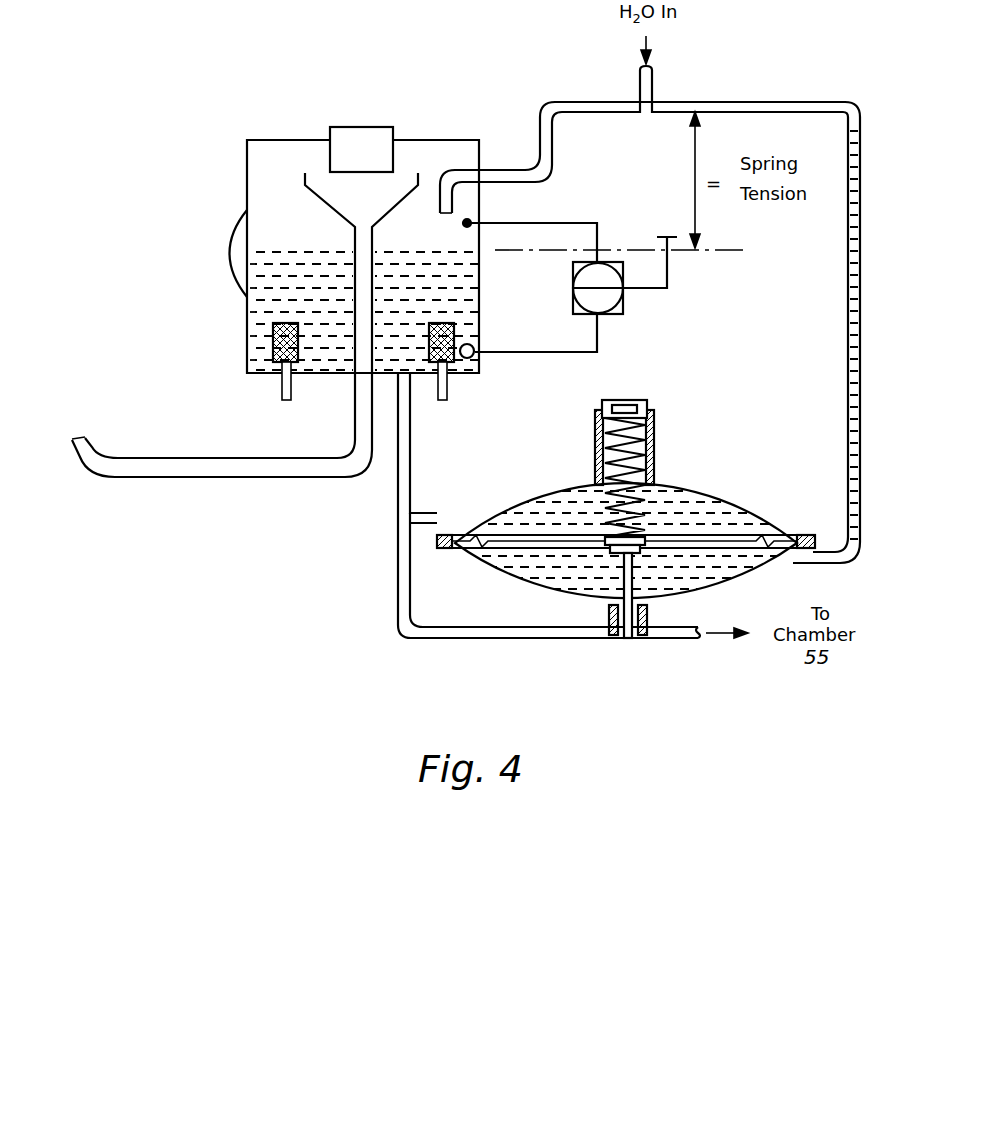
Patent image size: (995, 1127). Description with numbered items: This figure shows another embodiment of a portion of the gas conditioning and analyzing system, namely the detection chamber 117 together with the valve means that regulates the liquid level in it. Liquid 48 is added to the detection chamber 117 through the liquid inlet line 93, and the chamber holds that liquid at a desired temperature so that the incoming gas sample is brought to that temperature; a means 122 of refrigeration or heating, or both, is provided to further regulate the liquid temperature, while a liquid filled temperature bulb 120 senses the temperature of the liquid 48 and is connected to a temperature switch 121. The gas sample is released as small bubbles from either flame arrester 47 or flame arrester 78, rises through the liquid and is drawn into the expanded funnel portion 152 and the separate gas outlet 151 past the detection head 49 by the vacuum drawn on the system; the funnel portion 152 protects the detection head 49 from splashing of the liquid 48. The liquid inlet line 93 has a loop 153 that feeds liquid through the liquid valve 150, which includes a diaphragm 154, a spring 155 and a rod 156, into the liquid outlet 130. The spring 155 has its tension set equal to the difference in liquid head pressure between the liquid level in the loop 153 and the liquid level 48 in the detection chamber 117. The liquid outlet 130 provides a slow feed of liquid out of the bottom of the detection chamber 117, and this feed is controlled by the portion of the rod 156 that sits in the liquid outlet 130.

The flame arrester 47 is at (452, 365).
The liquid 48 is at (281, 252).
The detection head 49 is at (352, 126).
The flame arrester 78 is at (273, 346).
The liquid inlet line 93 is at (578, 101).
The detection chamber 117 is at (482, 203).
The liquid filled temperature bulb 120 is at (475, 341).
The temperature switch 121 is at (623, 310).
The means of refrigeration or heating 122 is at (229, 236).
The liquid outlet 130 is at (412, 467).
The liquid valve 150 is at (722, 492).
The gas outlet 151 is at (183, 458).
The funnel portion 152 is at (403, 187).
The loop 153 is at (848, 260).
The diaphragm 154 is at (745, 536).
The spring 155 is at (652, 432).
The rod 156 is at (608, 575).